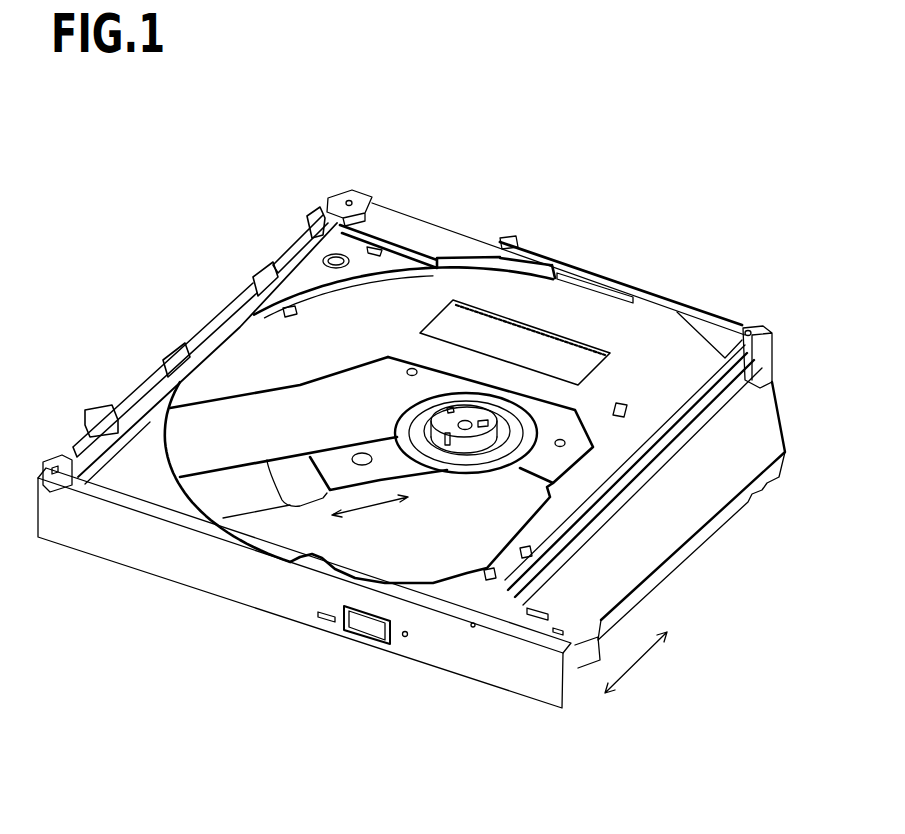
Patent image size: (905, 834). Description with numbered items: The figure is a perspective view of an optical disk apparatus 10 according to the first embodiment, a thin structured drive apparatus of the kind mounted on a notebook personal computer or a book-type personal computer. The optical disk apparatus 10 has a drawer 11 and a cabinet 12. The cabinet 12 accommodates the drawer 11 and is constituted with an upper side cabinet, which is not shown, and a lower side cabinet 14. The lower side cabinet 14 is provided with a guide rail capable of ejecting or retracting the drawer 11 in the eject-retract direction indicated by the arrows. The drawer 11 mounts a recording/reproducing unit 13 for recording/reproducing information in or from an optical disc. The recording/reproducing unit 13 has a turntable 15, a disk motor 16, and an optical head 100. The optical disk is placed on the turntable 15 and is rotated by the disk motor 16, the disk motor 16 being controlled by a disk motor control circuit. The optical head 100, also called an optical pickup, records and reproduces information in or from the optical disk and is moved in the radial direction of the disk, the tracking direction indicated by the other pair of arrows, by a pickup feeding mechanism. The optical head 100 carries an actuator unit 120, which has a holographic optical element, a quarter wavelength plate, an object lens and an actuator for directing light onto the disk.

The optical disk apparatus 10 is at (179, 234).
The drawer 11 is at (133, 487).
The cabinet 12 is at (760, 351).
The recording/reproducing unit 13 is at (273, 533).
The lower side cabinet 14 is at (682, 300).
The turntable 15 is at (410, 417).
The disk motor 16 is at (463, 487).
The optical head 100 is at (290, 472).
The actuator unit 120 is at (323, 457).